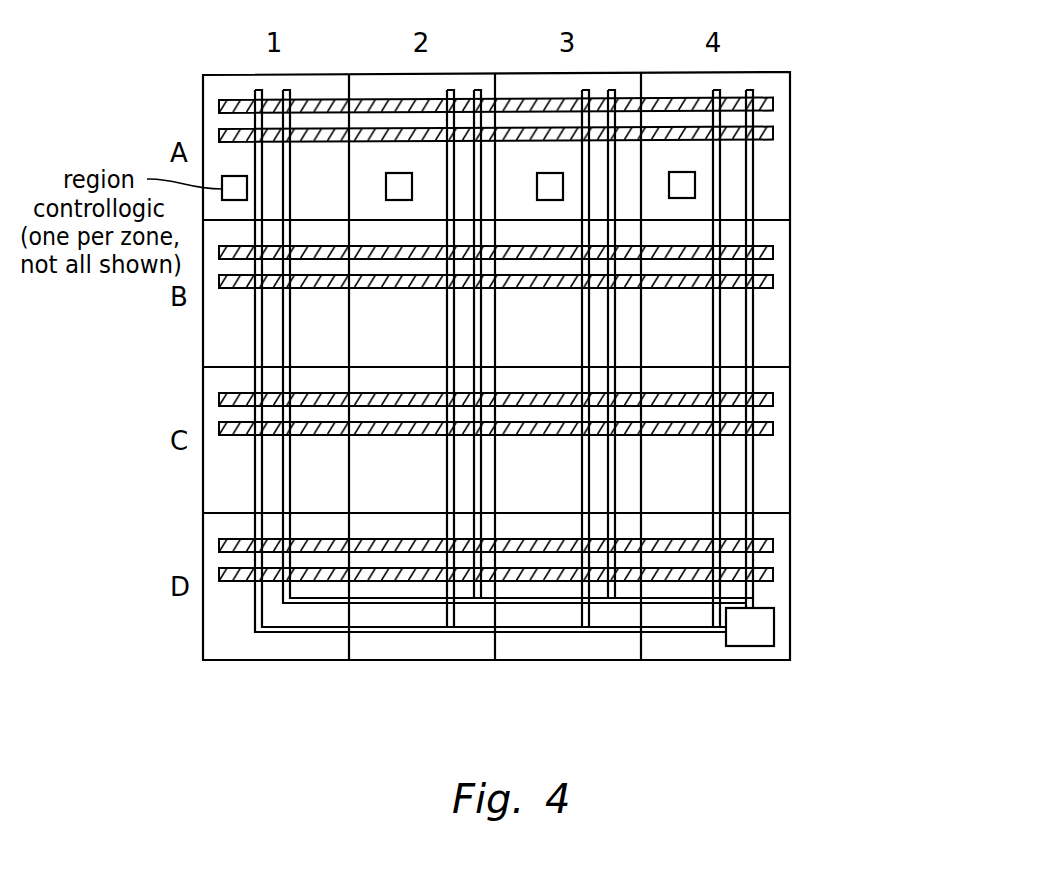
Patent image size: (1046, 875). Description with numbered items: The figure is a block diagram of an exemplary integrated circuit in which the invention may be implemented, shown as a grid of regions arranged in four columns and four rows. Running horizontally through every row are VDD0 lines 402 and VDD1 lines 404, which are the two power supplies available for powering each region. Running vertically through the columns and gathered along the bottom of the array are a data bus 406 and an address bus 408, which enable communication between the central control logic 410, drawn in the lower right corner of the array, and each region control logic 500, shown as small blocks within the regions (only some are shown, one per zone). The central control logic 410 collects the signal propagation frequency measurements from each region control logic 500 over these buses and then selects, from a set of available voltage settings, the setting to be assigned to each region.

The VDD0 lines 402 is at (870, 103).
The VDD1 lines 404 is at (871, 133).
The data bus 406 is at (254, 338).
The address bus 408 is at (283, 480).
The central control logic 410 is at (750, 646).
The region control logic 500 is at (386, 187).